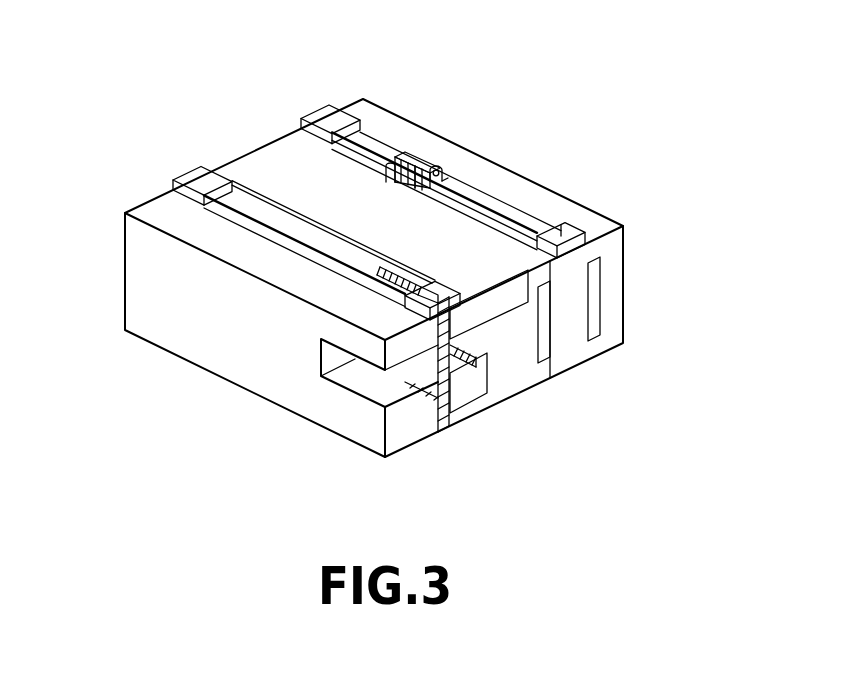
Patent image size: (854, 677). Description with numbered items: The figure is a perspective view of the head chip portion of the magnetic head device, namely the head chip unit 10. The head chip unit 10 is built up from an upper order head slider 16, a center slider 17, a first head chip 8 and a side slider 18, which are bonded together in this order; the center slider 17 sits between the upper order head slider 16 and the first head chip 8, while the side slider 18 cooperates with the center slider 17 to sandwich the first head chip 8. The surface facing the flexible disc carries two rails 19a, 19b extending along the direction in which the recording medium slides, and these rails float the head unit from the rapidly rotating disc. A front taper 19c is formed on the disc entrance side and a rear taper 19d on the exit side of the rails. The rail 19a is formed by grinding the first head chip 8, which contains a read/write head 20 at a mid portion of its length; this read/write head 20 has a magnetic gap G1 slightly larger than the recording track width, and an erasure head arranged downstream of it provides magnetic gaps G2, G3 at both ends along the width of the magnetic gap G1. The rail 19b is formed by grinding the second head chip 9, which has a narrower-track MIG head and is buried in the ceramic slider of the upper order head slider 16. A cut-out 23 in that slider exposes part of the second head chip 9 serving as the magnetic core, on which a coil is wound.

The first head chip 8 is at (570, 267).
The second head chip 9 is at (450, 308).
The head chip unit 10 is at (612, 122).
The upper order head slider 16 is at (317, 297).
The center slider 17 is at (268, 160).
The side slider 18 is at (462, 166).
The rail 19a is at (370, 137).
The rail 19b is at (287, 226).
The front taper 19c is at (190, 178).
The rear taper 19d is at (560, 237).
The read/write head 20 is at (393, 163).
The cut-out 23 is at (407, 387).
The magnetic gap G1 is at (398, 153).
The magnetic gap G2 is at (432, 167).
The magnetic gap G3 is at (444, 178).